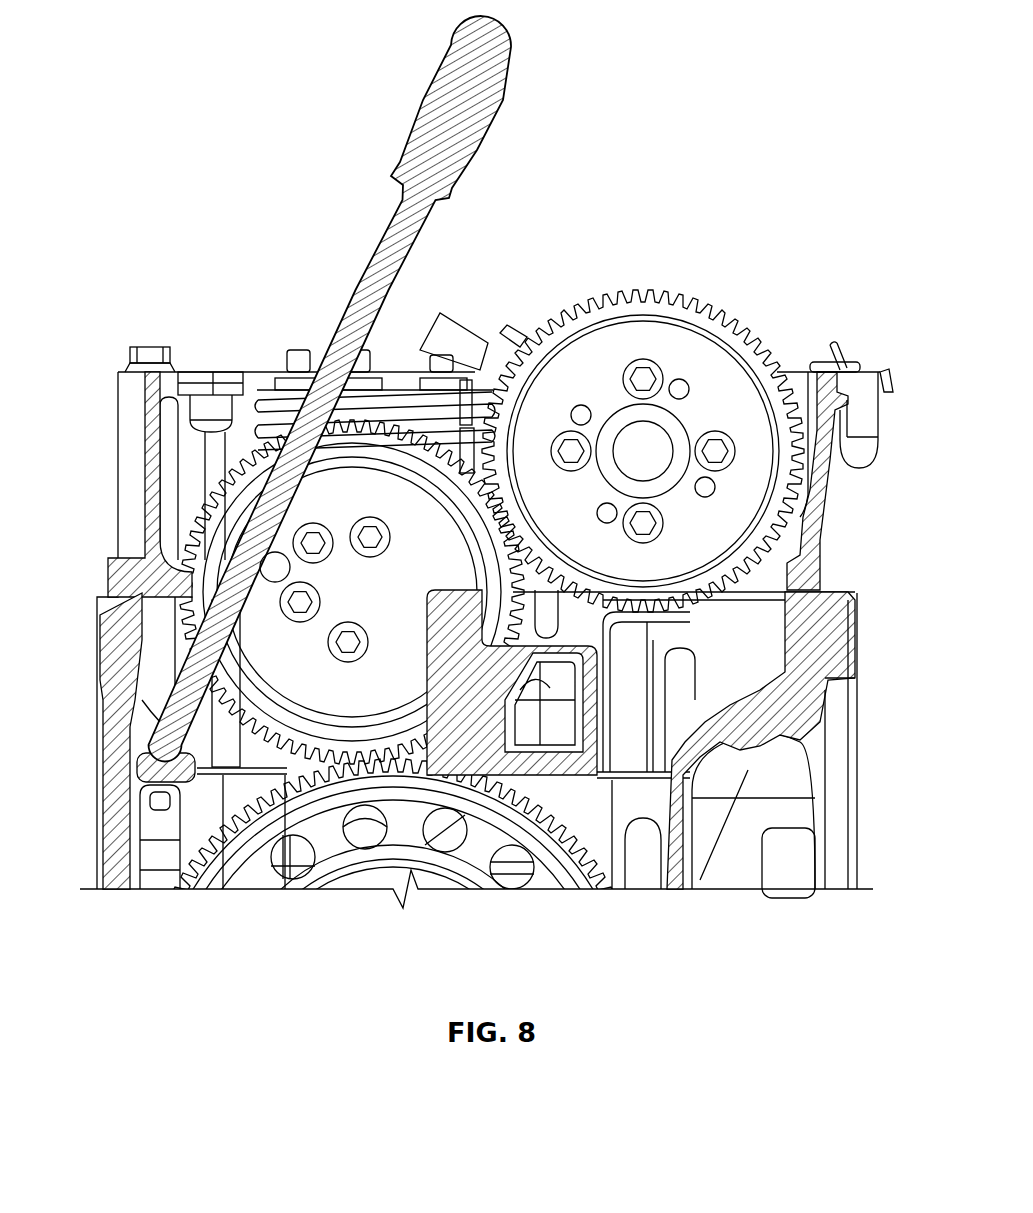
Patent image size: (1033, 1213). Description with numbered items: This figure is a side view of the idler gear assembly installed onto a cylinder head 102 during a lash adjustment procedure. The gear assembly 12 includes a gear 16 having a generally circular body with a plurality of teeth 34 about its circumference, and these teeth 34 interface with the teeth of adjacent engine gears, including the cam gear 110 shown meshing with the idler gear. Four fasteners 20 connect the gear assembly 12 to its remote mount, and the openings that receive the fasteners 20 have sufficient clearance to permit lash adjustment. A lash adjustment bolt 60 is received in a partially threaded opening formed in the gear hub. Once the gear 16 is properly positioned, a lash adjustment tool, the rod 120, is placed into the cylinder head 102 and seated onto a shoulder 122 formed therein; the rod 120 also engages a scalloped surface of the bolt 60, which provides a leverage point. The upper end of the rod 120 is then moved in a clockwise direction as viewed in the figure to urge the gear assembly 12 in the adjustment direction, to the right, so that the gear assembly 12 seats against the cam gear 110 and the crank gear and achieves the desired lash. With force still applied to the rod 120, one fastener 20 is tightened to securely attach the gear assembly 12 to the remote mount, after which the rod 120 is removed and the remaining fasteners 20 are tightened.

The gear assembly 12 is at (378, 705).
The gear 16 is at (153, 612).
The fasteners 20 is at (315, 545).
The teeth 34 is at (143, 503).
The lash adjustment bolt 60 is at (262, 573).
The cylinder head 102 is at (862, 732).
The cam gear 110 is at (752, 316).
The rod 120 is at (158, 762).
The shoulder 122 is at (132, 803).